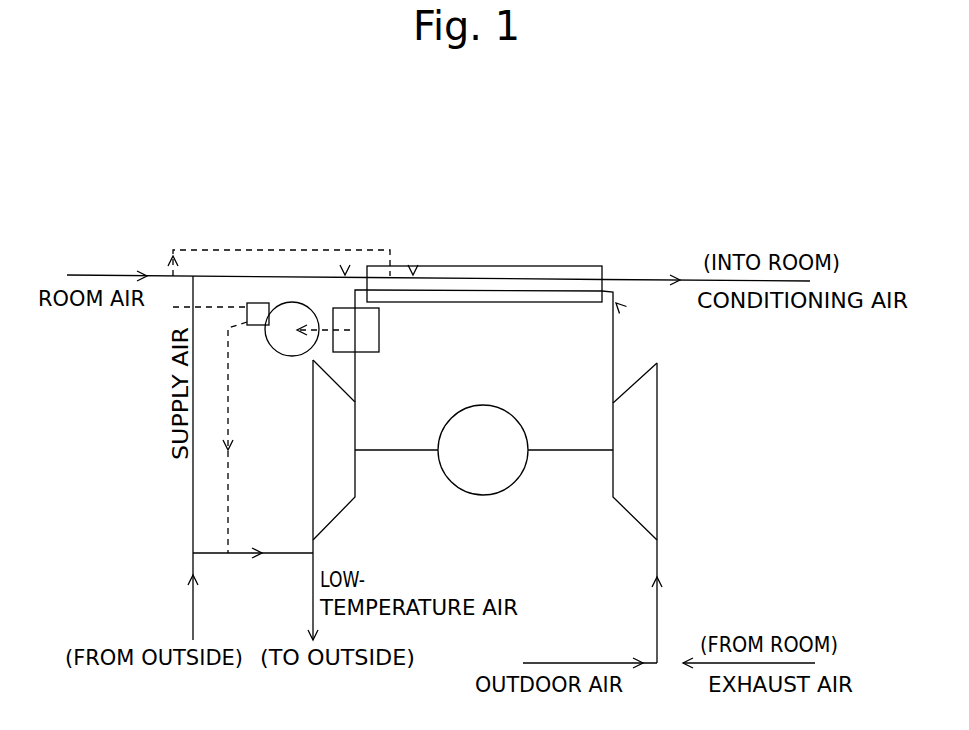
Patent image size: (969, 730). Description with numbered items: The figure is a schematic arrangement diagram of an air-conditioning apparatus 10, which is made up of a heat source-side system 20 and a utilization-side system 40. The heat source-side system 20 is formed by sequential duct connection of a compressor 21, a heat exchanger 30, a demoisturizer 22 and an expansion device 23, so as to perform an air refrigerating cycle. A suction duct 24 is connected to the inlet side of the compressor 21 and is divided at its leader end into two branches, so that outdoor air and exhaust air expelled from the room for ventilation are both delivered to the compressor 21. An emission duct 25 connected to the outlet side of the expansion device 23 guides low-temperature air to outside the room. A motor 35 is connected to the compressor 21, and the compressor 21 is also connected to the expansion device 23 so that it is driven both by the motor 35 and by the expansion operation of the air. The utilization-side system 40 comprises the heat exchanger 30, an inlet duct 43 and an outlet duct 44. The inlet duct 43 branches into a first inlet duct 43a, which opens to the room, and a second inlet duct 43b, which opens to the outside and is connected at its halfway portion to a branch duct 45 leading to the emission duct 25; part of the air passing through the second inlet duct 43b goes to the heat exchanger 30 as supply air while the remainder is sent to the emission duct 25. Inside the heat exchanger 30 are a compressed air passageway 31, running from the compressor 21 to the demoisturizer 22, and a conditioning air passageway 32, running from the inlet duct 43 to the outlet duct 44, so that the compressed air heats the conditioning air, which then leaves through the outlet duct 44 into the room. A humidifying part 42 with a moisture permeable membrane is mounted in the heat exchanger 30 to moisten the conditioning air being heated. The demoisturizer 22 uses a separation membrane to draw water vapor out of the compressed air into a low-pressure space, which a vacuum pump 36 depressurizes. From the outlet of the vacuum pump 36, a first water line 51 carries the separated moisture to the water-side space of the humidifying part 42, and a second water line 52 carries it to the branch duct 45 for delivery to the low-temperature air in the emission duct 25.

The air-conditioning apparatus 10 is at (718, 201).
The heat source-side system 20 is at (618, 305).
The compressor 21 is at (657, 428).
The demoisturizer 22 is at (379, 342).
The expansion device 23 is at (355, 478).
The suction duct 24 is at (657, 610).
The emission duct 25 is at (313, 578).
The heat exchanger 30 is at (484, 284).
The compressed air passageway 31 is at (525, 302).
The conditioning air passageway 32 is at (524, 266).
The motor 35 is at (490, 496).
The vacuum pump 36 is at (292, 357).
The utilization-side system 40 is at (346, 273).
The humidifying part 42 is at (414, 273).
The inlet duct 43 is at (217, 407).
The first inlet duct 43a is at (110, 276).
The second inlet duct 43b is at (193, 492).
The outlet duct 44 is at (634, 280).
The branch duct 45 is at (292, 553).
The first water line 51 is at (298, 250).
The second water line 52 is at (228, 422).